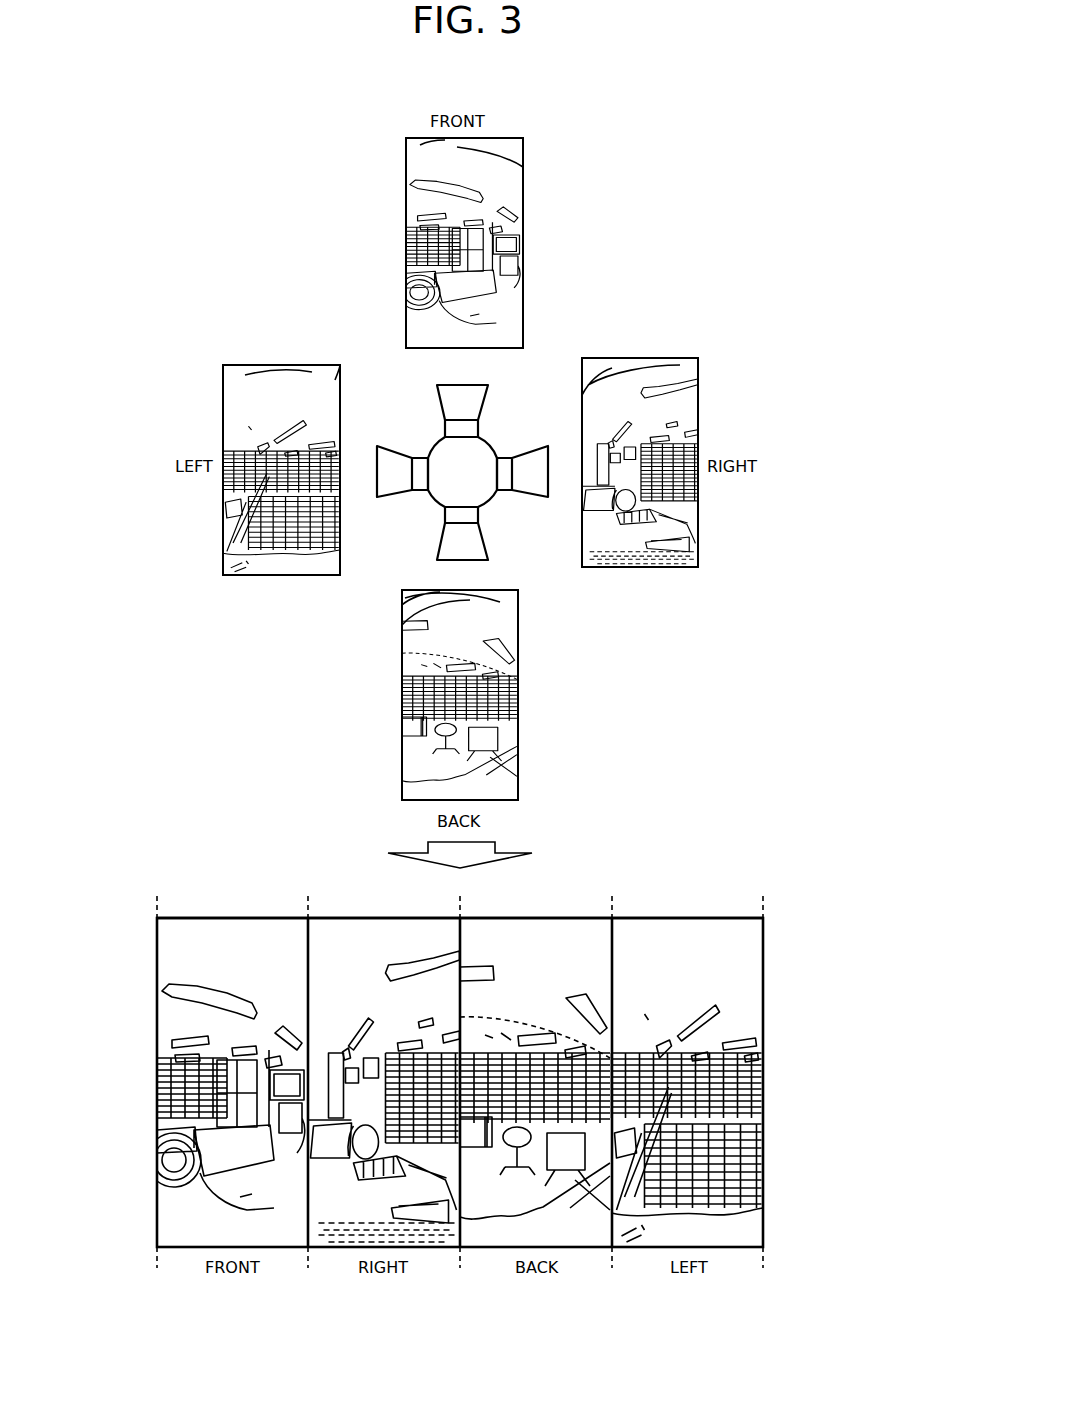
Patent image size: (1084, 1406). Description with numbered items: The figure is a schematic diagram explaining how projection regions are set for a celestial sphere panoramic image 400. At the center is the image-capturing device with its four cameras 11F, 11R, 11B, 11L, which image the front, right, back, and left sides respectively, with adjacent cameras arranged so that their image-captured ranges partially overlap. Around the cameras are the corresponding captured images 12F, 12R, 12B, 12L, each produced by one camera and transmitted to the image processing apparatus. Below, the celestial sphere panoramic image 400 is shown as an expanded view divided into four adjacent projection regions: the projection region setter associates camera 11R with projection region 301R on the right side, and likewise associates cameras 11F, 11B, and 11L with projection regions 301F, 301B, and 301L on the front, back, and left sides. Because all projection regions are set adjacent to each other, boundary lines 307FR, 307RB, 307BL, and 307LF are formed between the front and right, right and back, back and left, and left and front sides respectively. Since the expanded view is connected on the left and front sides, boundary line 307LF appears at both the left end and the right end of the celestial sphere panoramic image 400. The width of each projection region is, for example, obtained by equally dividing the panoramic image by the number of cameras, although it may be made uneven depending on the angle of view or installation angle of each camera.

The camera 11F is at (440, 400).
The camera 11R is at (522, 455).
The camera 11L is at (402, 492).
The camera 11B is at (483, 542).
The captured image 12F is at (523, 180).
The captured image 12R is at (638, 358).
The captured image 12B is at (518, 658).
The captured image 12L is at (262, 365).
The projection region 301F is at (187, 918).
The projection region 301R is at (342, 918).
The projection region 301B is at (585, 918).
The projection region 301L is at (738, 918).
The boundary line 307LF is at (157, 907).
The boundary line 307FR is at (308, 907).
The boundary line 307RB is at (460, 907).
The boundary line 307BL is at (612, 907).
The celestial sphere panoramic image 400 is at (788, 865).